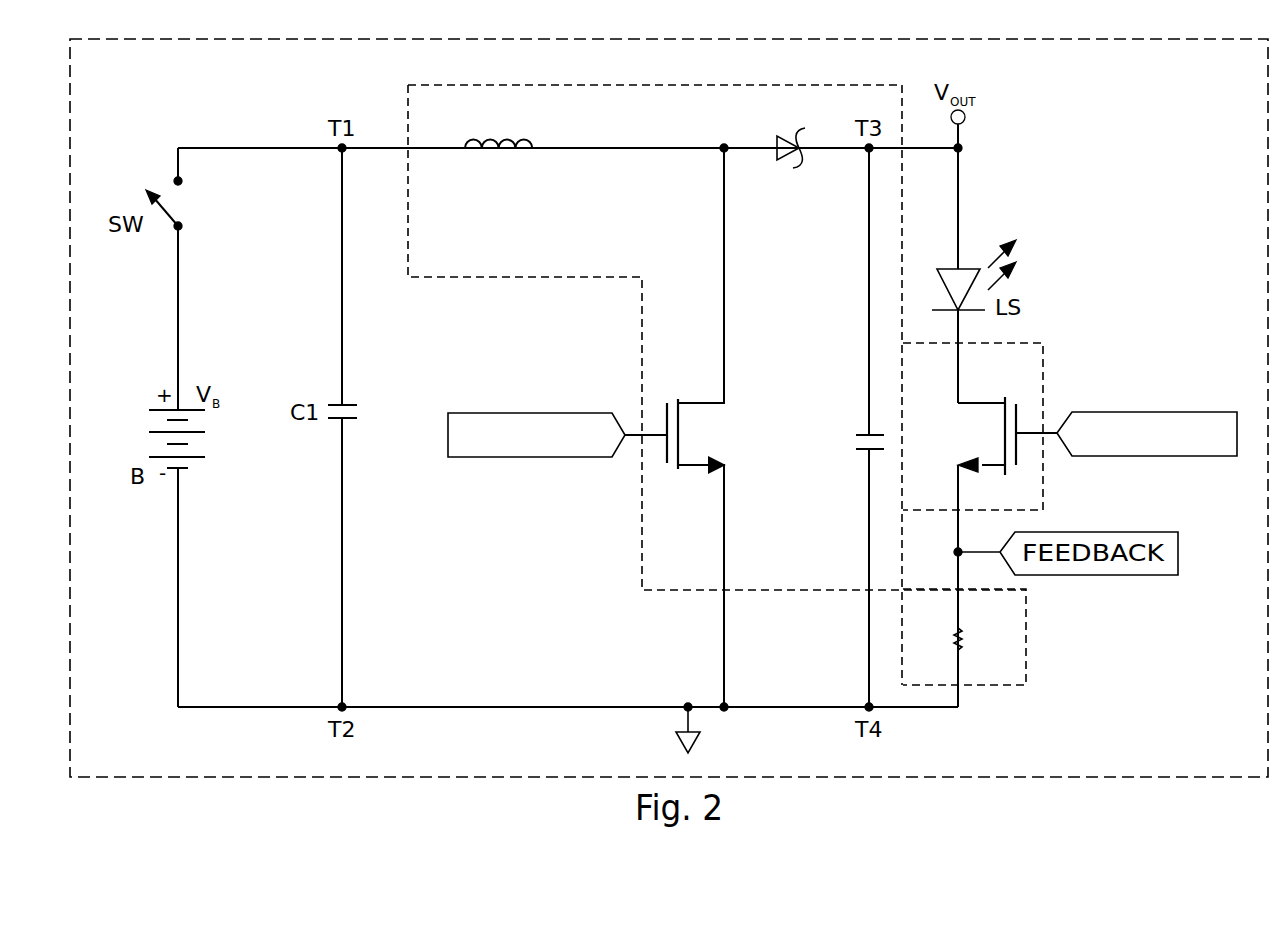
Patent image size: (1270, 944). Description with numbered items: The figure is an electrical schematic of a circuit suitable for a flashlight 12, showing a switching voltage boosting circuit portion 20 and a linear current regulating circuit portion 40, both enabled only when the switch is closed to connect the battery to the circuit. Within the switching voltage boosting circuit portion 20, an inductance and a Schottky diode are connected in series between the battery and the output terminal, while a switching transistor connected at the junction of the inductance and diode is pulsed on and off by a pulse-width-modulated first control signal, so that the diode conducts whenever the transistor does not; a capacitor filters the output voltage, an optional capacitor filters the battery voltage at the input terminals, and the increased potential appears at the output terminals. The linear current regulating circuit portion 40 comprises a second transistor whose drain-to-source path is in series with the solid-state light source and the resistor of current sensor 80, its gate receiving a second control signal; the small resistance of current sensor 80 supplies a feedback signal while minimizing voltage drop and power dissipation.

The flashlight 12 is at (1213, 42).
The switching voltage boosting circuit portion 20 is at (601, 243).
The linear current regulating circuit portion 40 is at (1052, 392).
The current sensor 80 is at (1034, 642).